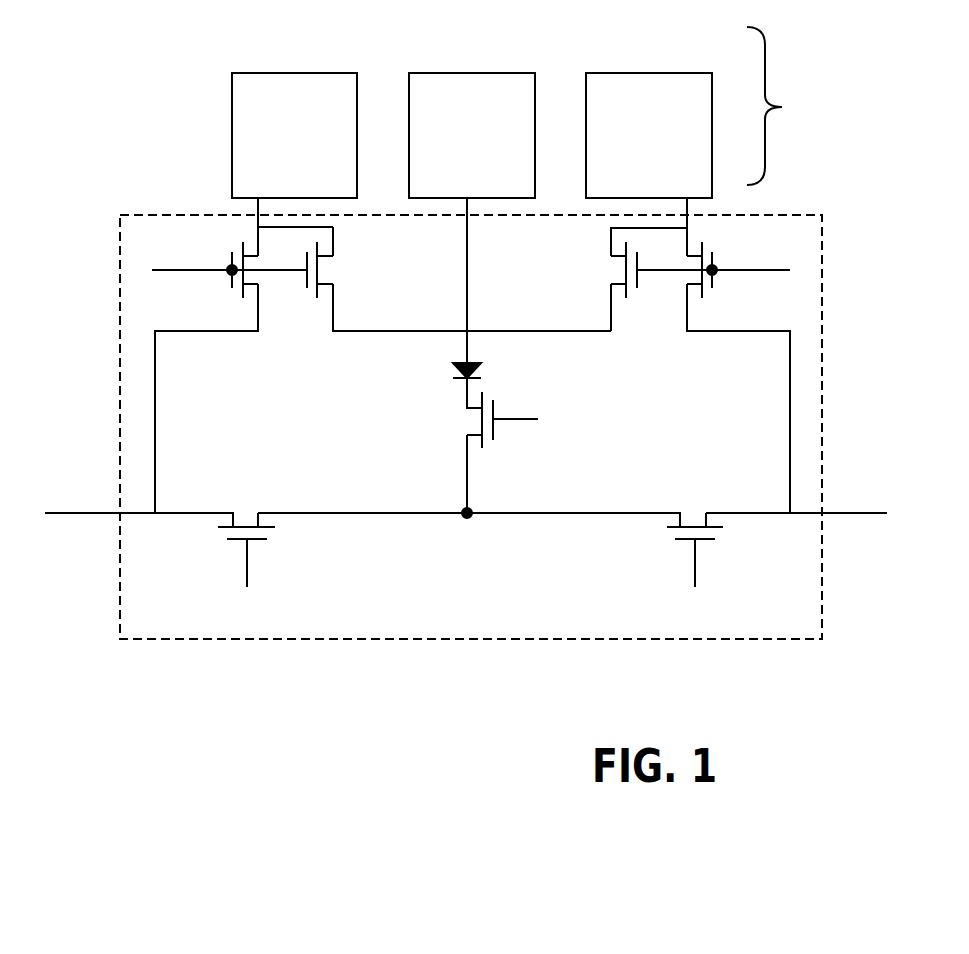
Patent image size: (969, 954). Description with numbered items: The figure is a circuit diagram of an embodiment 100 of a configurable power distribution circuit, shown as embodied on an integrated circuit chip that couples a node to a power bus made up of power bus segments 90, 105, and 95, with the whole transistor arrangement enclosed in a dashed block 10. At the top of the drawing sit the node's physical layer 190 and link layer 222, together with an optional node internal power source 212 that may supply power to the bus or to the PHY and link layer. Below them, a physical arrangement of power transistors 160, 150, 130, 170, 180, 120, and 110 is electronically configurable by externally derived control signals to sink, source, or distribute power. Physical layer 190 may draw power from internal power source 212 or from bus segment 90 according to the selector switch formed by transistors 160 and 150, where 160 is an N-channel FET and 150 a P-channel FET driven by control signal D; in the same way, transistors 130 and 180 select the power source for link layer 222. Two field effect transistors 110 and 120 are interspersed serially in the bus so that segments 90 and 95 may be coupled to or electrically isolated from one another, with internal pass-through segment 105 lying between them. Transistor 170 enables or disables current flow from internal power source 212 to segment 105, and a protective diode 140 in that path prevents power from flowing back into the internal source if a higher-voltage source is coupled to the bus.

The power management circuit (dashed enclosure) 10 is at (260, 639).
The power bus segment 90 is at (93, 513).
The power bus segment 95 is at (877, 513).
The configurable power distribution circuit embodiment 100 is at (468, 710).
The pass-through bus segment 105 is at (435, 513).
The power field effect transistor 110 is at (275, 527).
The power field effect transistor 120 is at (668, 530).
The power transistor 130 is at (626, 298).
The diode 140 is at (455, 368).
The power transistor 150 is at (317, 298).
The power transistor 160 is at (243, 243).
The field effect transistor 170 is at (484, 398).
The power transistor 180 is at (703, 293).
The physical layer 190 is at (268, 72).
The node internal power source 212 is at (488, 72).
The link layer 222 is at (655, 72).